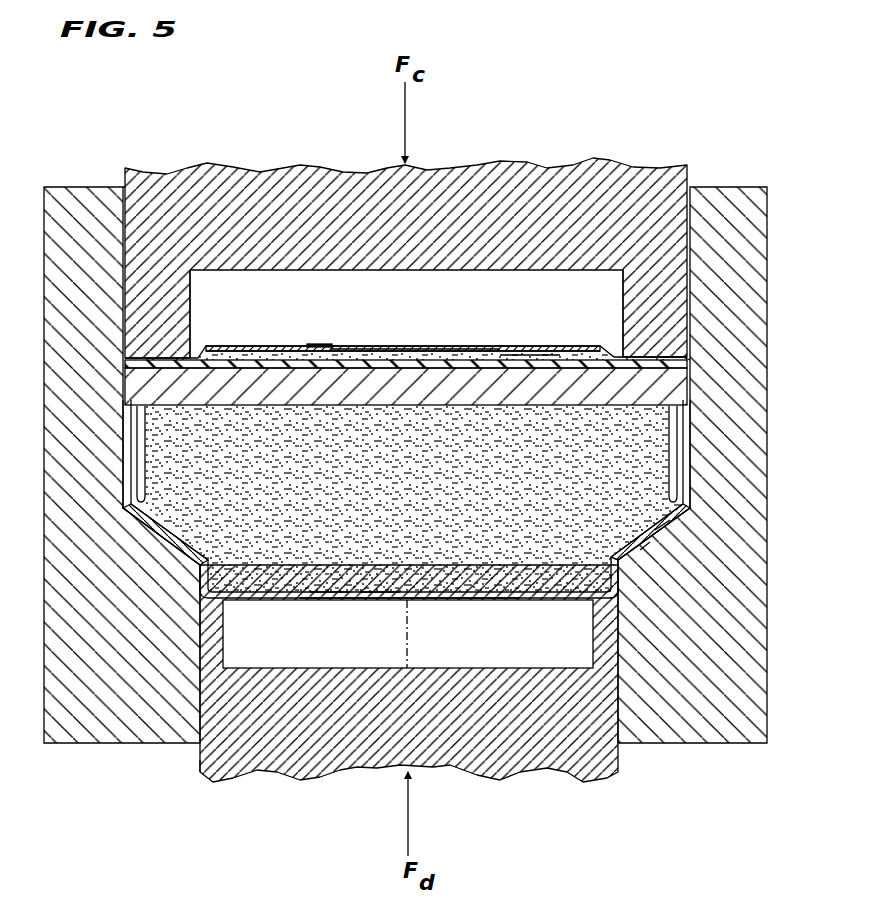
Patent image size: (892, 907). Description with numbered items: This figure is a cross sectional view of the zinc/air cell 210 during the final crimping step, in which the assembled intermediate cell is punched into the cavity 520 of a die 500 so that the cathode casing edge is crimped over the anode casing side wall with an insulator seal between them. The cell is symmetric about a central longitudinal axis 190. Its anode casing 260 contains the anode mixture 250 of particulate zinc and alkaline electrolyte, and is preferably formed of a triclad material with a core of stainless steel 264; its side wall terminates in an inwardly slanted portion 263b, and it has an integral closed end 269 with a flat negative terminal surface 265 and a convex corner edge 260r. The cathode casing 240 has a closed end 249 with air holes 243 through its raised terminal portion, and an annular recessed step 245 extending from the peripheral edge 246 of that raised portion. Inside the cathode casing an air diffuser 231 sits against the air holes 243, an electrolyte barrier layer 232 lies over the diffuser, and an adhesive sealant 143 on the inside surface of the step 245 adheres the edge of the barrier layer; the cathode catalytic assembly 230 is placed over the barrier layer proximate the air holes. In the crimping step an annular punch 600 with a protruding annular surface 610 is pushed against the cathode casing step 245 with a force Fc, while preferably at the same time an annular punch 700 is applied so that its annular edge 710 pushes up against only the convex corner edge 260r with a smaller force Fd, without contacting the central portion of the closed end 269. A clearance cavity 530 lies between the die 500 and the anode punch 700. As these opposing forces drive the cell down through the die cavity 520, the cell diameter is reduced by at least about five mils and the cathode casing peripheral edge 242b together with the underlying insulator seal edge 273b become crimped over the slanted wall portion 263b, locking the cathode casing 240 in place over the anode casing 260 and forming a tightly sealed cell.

The die 500 is at (80, 187).
The cavity 520 is at (123, 186).
The clearance cavity 530 is at (199, 765).
The annular punch 600 is at (612, 163).
The protruding annular surface 610 is at (190, 288).
The annular punch 700 is at (578, 775).
The annular edge 710 is at (225, 653).
The central longitudinal axis 190 is at (409, 650).
The anode casing 260 is at (523, 604).
The inwardly slanted portion 263b is at (630, 540).
The peripheral edge 242b is at (668, 547).
The peripheral edge 273b is at (645, 557).
The convex corner edge 260r is at (626, 598).
The stainless steel 264 is at (443, 600).
The negative terminal surface 265 is at (383, 600).
The closed end 269 is at (332, 600).
The anode mixture 250 is at (257, 540).
The cathode catalytic assembly 230 is at (665, 386).
The electrolyte barrier layer 232 is at (203, 364).
The cathode casing 240 is at (516, 340).
The peripheral edge of the raised terminal portion 246 is at (201, 345).
The closed end 249 is at (380, 346).
The zinc/air cell 210 is at (292, 328).
The air holes 243 is at (500, 346).
The air diffuser 231 is at (525, 346).
The annular recessed step 245 is at (668, 352).
The adhesive sealant 143 is at (688, 361).